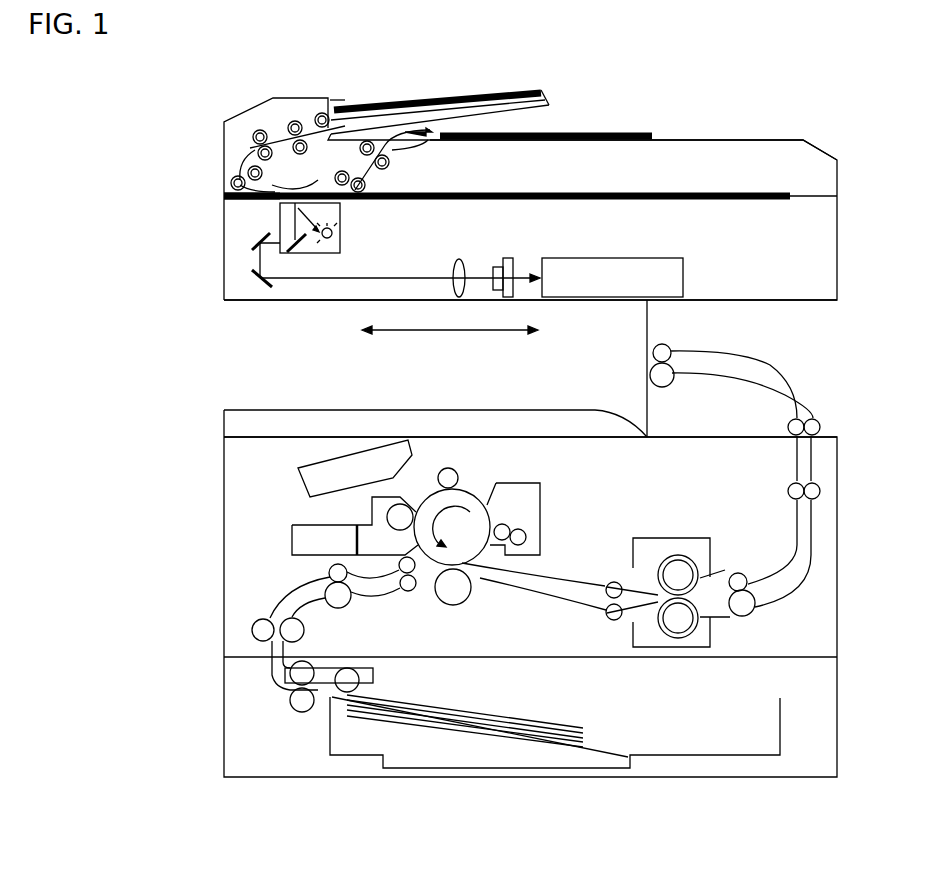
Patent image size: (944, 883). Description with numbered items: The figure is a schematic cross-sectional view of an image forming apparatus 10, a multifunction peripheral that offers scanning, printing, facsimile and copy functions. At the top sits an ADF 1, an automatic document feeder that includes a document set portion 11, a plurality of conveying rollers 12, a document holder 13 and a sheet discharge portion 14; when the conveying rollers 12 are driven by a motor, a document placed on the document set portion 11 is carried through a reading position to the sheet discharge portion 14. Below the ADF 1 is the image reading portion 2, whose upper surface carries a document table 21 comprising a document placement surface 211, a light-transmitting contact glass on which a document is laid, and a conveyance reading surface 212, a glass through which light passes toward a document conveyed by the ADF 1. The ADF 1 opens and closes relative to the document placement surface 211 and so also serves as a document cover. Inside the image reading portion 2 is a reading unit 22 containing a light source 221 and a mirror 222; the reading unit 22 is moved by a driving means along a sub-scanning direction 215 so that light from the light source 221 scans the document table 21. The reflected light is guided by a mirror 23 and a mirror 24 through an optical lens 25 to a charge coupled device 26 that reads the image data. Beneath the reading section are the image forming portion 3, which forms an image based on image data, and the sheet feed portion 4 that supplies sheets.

The image forming apparatus 10 is at (211, 61).
The ADF 1 is at (223, 146).
The document set portion 11 is at (397, 100).
The conveying rollers 12 is at (260, 129).
The document holder 13 is at (288, 192).
The sheet discharge portion 14 is at (696, 139).
The image reading portion 2 is at (223, 258).
The document table 21 is at (803, 200).
The document placement surface 211 is at (703, 202).
The conveyance reading surface 212 is at (275, 201).
The reading unit 22 is at (345, 222).
The light source 221 is at (340, 240).
The mirror 222 is at (308, 250).
The mirror 23 is at (258, 244).
The mirror 24 is at (260, 280).
The optical lens 25 is at (465, 260).
The charge coupled device 26 is at (508, 258).
The sub-scanning direction 215 is at (440, 333).
The image forming portion 3 is at (250, 461).
The sheet feed portion 4 is at (223, 716).